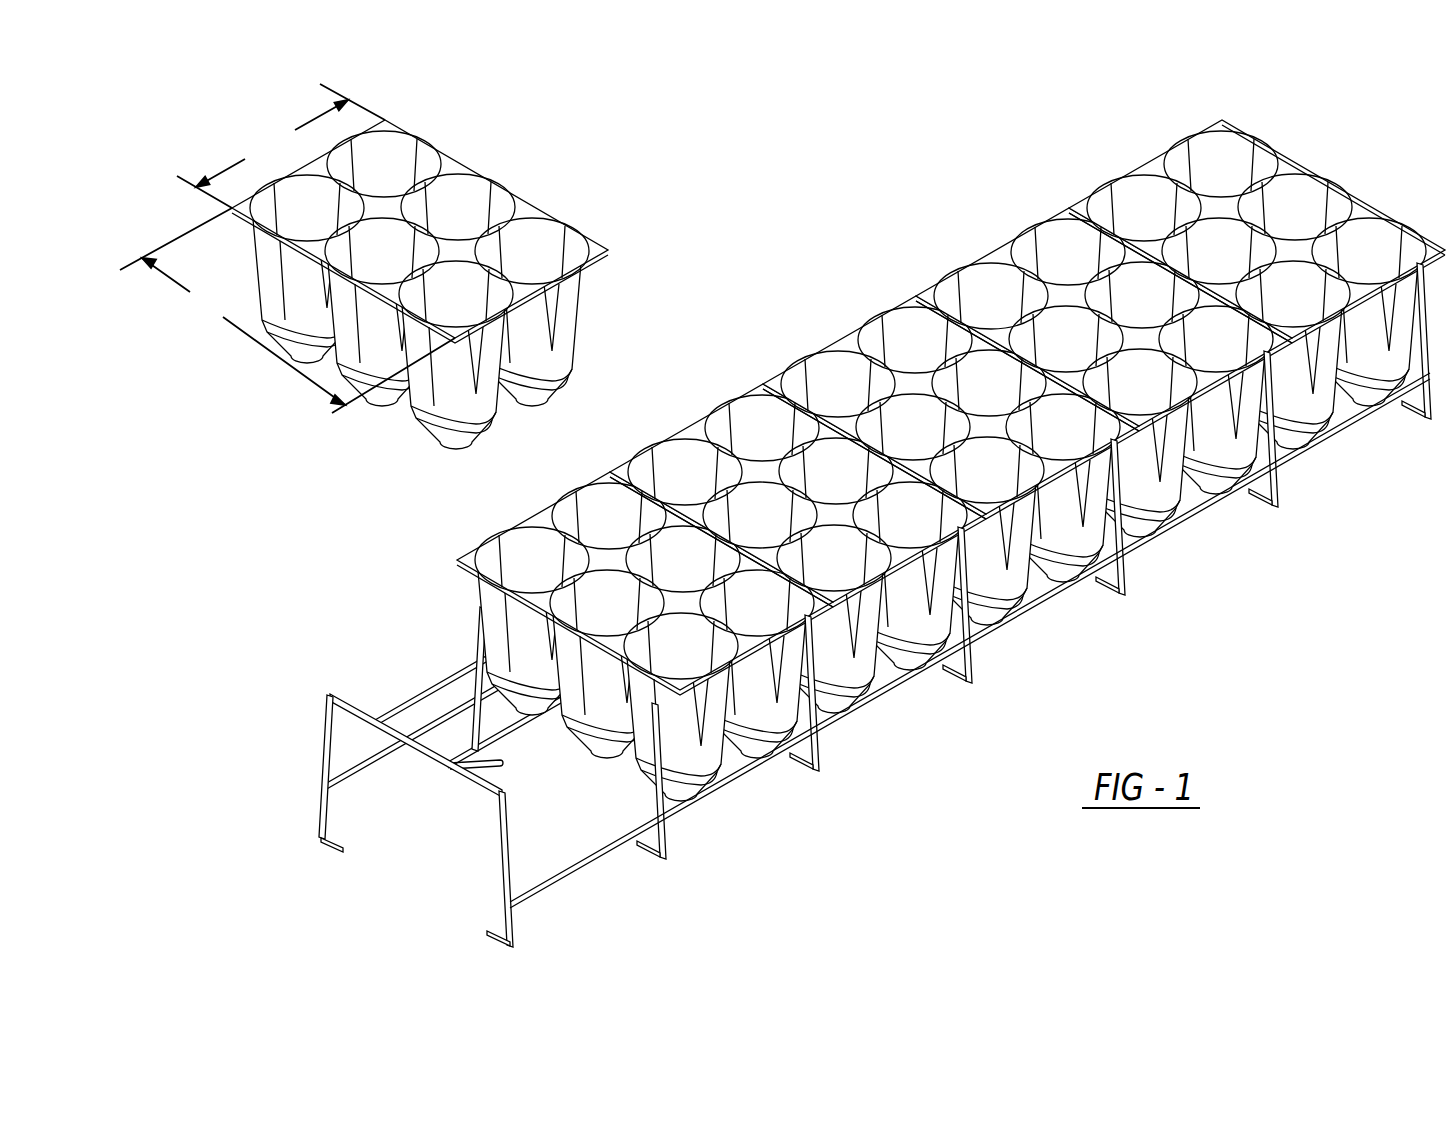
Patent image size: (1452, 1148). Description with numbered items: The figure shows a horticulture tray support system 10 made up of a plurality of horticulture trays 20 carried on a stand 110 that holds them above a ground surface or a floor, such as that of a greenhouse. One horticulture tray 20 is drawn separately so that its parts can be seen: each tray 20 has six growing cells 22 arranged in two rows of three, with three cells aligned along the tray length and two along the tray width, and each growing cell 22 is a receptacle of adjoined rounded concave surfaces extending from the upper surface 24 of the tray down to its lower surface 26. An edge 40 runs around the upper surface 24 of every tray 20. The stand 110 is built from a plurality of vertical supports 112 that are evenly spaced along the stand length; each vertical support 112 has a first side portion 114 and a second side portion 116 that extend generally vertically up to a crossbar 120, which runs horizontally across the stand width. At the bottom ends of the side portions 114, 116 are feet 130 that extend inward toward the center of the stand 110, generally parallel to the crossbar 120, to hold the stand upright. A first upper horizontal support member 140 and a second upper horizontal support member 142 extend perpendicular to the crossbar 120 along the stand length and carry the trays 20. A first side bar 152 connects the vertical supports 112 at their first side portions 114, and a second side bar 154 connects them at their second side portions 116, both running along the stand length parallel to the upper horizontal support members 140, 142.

The horticulture tray support system 10 is at (782, 497).
The horticulture tray 20 is at (782, 424).
The growing cell 22 is at (442, 188).
The upper surface 24 is at (516, 205).
The lower surface 26 is at (554, 392).
The edge 40 is at (598, 246).
The stand 110 is at (782, 497).
The vertical support 112 is at (1436, 393).
The first side portion 114 is at (325, 743).
The second side portion 116 is at (497, 820).
The crossbar 120 is at (353, 698).
The feet 130 is at (348, 852).
The first upper horizontal support member 140 is at (440, 680).
The second upper horizontal support member 142 is at (522, 732).
The first side bar 152 is at (347, 775).
The second side bar 154 is at (550, 883).